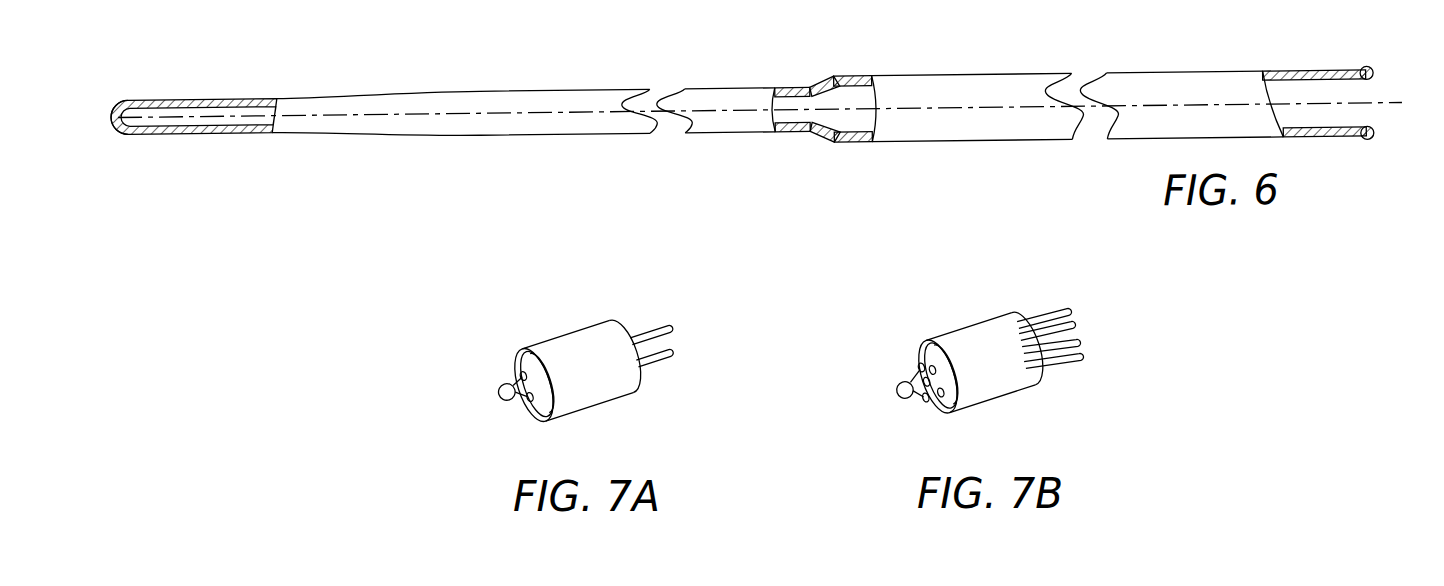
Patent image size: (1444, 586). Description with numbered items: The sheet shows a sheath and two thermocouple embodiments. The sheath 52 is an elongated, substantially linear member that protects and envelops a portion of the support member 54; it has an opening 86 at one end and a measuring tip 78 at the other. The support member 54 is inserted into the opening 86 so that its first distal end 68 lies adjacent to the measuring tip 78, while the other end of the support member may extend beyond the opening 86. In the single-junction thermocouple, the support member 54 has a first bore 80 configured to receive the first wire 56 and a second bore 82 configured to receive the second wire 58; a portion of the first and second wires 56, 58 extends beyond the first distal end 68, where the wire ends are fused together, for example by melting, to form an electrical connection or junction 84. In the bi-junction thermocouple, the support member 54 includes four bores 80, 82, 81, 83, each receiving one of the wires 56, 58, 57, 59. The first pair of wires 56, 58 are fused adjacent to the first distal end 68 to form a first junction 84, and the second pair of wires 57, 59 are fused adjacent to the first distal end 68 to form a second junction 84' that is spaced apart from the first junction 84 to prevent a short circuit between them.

In FIG. 6, the sheath 52 is at (218, 128).
In FIG. 6, the measuring tip 78 is at (113, 122).
In FIG. 6, the opening 86 is at (1378, 94).
In FIG. 7A, the support member 54 is at (572, 352).
In FIG. 7B, the support member 54 is at (975, 343).
In FIG. 7A, the first wire 56 is at (642, 332).
In FIG. 7B, the first wire 56 is at (1038, 320).
In FIG. 7A, the second wire 58 is at (653, 367).
In FIG. 7B, the second wire 58 is at (1072, 323).
In FIG. 7B, the third wire 57 is at (1060, 365).
In FIG. 7B, the fourth wire 59 is at (1080, 343).
In FIG. 7A, the first distal end 68 is at (513, 367).
In FIG. 7A, the first bore 80 is at (515, 365).
In FIG. 7B, the first bore 80 is at (918, 365).
In FIG. 7B, the bore 81 is at (953, 403).
In FIG. 7A, the second bore 82 is at (530, 402).
In FIG. 7B, the second bore 82 is at (928, 400).
In FIG. 7B, the bore 83 is at (927, 350).
In FIG. 7A, the junction 84 is at (485, 396).
In FIG. 7B, the junction 84 is at (883, 391).
In FIG. 7B, the second junction 84' is at (959, 380).